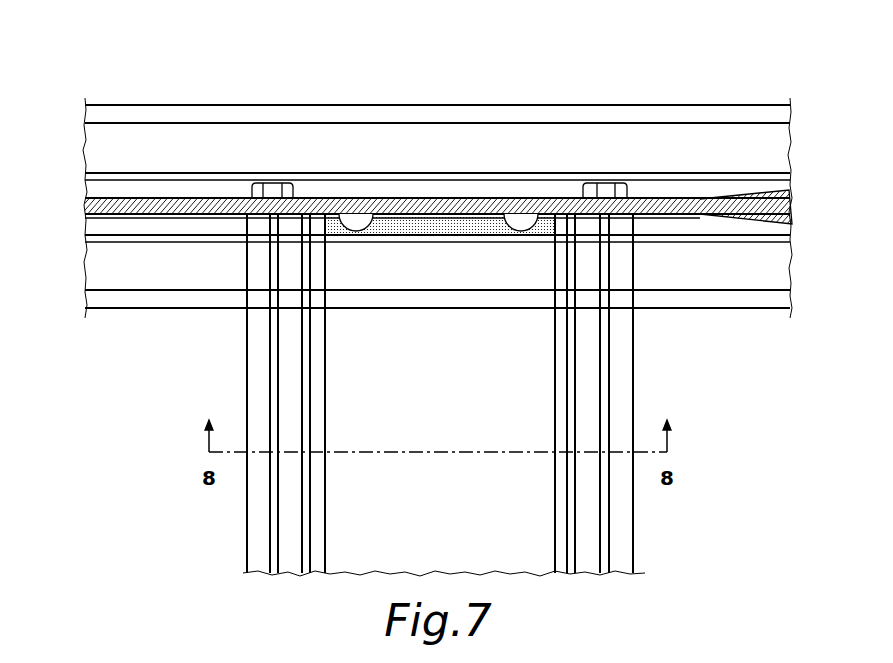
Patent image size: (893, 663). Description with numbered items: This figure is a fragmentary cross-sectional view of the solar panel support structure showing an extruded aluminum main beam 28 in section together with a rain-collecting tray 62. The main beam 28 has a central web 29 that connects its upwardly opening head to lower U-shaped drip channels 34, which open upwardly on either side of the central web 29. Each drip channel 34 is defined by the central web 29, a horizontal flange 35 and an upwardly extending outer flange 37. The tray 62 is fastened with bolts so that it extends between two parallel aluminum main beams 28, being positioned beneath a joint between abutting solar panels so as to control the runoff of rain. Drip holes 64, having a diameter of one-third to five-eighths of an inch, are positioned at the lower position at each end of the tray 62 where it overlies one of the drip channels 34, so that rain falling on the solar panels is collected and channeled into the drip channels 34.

The main beam 28 is at (113, 243).
The central web 29 is at (215, 198).
The drip channel 34 is at (131, 105).
The horizontal flange 35 is at (437, 205).
The outer flange 37 is at (232, 105).
The tray 62 is at (634, 516).
The drip hole 64 is at (362, 222).